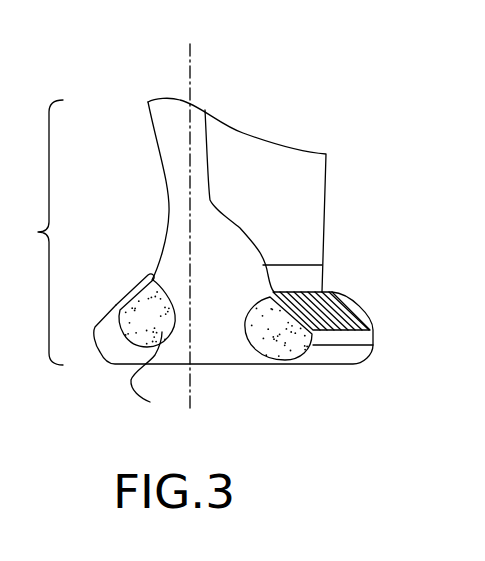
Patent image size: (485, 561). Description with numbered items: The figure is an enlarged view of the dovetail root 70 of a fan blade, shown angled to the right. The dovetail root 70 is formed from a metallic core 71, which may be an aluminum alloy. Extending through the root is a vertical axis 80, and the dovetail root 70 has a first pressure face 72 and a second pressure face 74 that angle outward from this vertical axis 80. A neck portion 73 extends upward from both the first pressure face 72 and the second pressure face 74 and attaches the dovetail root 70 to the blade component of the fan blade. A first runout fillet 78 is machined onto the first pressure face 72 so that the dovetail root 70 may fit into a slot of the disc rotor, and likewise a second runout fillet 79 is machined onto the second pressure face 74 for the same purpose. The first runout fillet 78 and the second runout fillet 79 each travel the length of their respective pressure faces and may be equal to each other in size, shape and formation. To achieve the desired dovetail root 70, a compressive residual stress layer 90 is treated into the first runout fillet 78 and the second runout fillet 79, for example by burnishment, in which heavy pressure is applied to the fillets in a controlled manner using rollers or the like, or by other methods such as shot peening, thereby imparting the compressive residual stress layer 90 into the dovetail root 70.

The dovetail root 70 is at (35, 232).
The metallic core 71 is at (296, 212).
The first pressure face 72 is at (347, 317).
The neck portion 73 is at (313, 280).
The second pressure face 74 is at (118, 309).
The first runout fillet 78 is at (360, 313).
The second runout fillet 79 is at (140, 279).
The vertical axis 80 is at (190, 71).
The compressive residual stress layer 90 is at (263, 343).